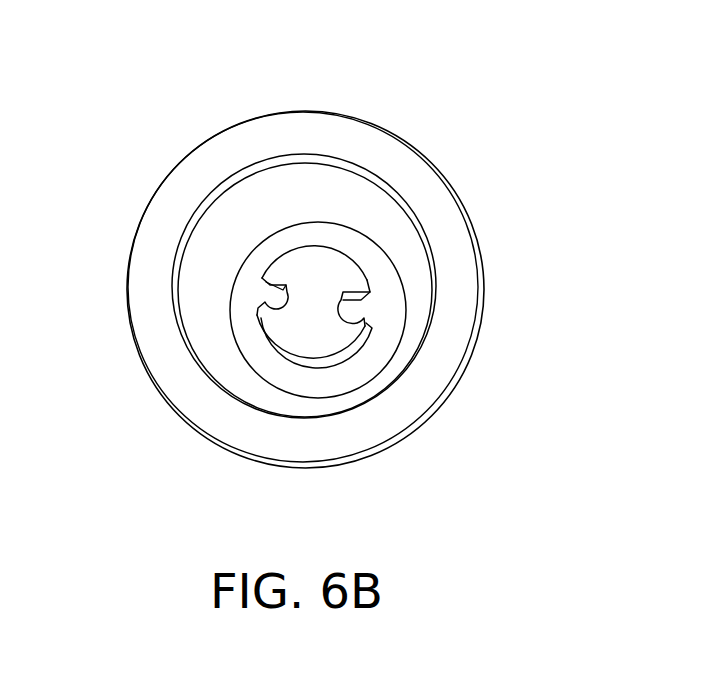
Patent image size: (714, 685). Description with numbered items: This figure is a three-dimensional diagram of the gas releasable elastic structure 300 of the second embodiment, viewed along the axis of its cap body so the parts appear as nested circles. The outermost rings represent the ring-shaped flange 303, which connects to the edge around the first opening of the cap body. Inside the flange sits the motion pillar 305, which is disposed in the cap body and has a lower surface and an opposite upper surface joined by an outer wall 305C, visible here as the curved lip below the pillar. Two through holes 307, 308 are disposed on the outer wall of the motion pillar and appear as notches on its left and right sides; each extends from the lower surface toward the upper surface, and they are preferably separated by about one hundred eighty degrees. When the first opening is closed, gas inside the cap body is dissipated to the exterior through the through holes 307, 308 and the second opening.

The gas releasable elastic structure 300 is at (523, 82).
The ring-shaped flange 303 is at (423, 190).
The motion pillar 305 is at (340, 268).
The outer wall 305C is at (341, 366).
The through hole 307 is at (256, 296).
The through hole 308 is at (389, 313).